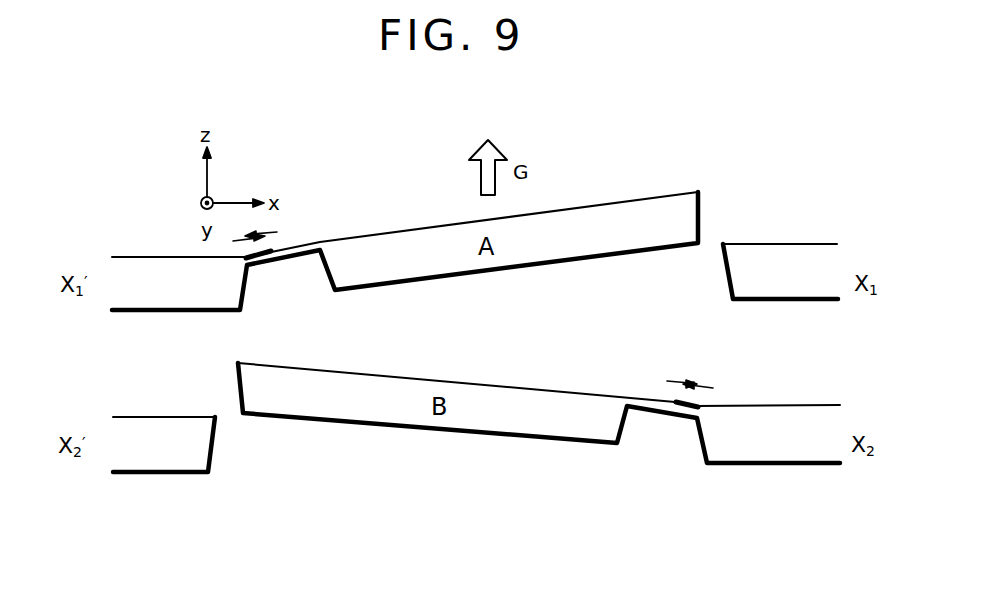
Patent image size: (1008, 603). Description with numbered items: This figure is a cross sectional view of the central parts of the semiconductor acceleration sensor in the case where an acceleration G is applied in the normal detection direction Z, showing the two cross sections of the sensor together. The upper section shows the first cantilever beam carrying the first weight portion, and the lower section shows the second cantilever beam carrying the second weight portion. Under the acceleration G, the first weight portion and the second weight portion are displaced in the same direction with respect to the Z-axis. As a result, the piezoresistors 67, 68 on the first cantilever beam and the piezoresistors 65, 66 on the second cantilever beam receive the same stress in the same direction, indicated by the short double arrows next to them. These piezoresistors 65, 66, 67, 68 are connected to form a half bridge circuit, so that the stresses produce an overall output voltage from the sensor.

The piezoresistor 65 is at (743, 384).
The piezoresistor 66 is at (693, 403).
The piezoresistor 67 is at (287, 295).
The piezoresistor 68 is at (257, 267).